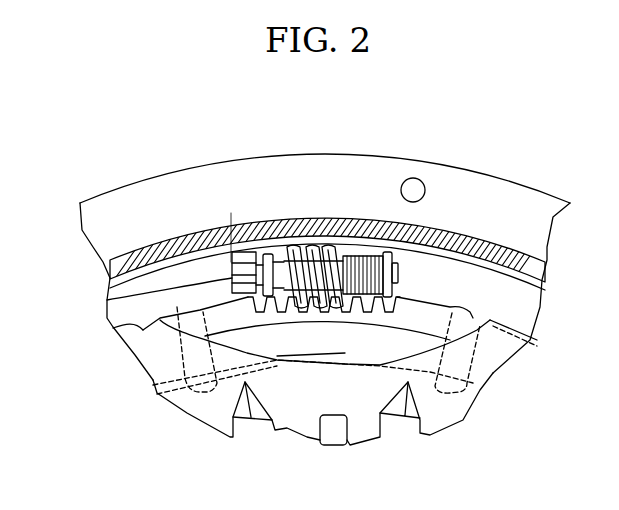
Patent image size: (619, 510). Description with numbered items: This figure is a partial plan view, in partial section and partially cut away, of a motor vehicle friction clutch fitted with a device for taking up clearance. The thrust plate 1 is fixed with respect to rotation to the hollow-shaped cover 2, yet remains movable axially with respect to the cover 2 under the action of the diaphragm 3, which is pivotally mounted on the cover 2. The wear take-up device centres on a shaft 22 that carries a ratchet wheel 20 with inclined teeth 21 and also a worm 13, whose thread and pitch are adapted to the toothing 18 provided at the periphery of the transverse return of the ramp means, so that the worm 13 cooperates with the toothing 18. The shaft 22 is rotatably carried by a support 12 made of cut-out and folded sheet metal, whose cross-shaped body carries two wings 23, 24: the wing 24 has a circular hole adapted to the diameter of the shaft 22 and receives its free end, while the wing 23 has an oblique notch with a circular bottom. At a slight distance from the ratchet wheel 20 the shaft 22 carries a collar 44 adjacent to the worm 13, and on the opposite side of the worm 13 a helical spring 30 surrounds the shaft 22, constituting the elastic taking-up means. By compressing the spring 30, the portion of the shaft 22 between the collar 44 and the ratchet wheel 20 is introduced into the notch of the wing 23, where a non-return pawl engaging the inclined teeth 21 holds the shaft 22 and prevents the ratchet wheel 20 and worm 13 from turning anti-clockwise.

The thrust plate 1 is at (525, 298).
The cover 2 is at (505, 174).
The diaphragm 3 is at (531, 323).
The support 12 is at (160, 320).
The worm 13 is at (303, 237).
The toothing 18 is at (390, 302).
The ratchet wheel 20 is at (220, 267).
The inclined teeth 21 is at (250, 293).
The shaft 22 is at (398, 273).
The wing 23 is at (263, 220).
The wing 24 is at (390, 252).
The helical spring 30 is at (363, 255).
The collar 44 is at (273, 250).